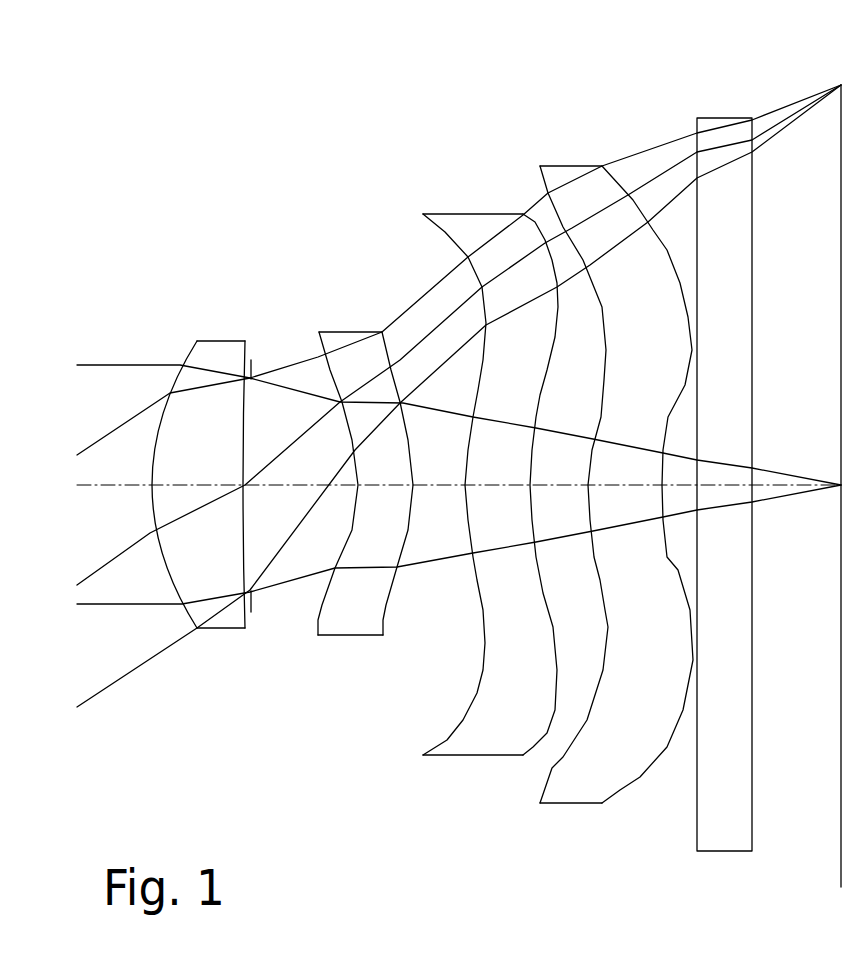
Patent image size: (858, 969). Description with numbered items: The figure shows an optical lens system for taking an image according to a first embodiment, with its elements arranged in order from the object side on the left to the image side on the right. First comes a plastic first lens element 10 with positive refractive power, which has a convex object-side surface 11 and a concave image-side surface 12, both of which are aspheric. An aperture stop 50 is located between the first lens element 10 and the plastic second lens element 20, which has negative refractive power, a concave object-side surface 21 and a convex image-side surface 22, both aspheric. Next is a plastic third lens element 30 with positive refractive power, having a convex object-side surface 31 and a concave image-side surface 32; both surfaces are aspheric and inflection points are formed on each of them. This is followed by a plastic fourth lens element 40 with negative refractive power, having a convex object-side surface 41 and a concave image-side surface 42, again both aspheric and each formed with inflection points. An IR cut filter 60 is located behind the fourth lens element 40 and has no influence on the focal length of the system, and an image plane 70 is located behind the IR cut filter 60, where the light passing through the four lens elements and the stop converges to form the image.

The first lens element 10 is at (165, 501).
The object-side surface of the first lens element 11 is at (165, 572).
The image-side surface of the first lens element 12 is at (243, 572).
The second lens element 20 is at (343, 476).
The object-side surface of the second lens element 21 is at (306, 529).
The image-side surface of the second lens element 22 is at (393, 605).
The third lens element 30 is at (460, 482).
The object-side surface of the third lens element 31 is at (424, 537).
The image-side surface of the third lens element 32 is at (503, 537).
The fourth lens element 40 is at (616, 476).
The object-side surface of the fourth lens element 41 is at (552, 768).
The image-side surface of the fourth lens element 42 is at (620, 788).
The aperture stop 50 is at (253, 358).
The IR cut filter 60 is at (715, 115).
The image plane 70 is at (840, 822).